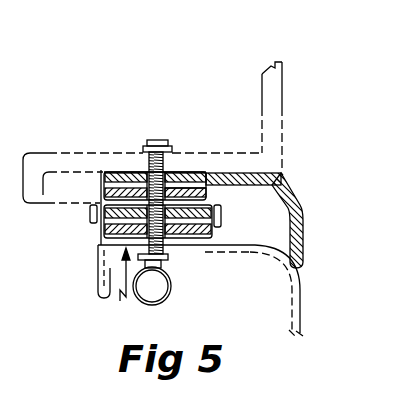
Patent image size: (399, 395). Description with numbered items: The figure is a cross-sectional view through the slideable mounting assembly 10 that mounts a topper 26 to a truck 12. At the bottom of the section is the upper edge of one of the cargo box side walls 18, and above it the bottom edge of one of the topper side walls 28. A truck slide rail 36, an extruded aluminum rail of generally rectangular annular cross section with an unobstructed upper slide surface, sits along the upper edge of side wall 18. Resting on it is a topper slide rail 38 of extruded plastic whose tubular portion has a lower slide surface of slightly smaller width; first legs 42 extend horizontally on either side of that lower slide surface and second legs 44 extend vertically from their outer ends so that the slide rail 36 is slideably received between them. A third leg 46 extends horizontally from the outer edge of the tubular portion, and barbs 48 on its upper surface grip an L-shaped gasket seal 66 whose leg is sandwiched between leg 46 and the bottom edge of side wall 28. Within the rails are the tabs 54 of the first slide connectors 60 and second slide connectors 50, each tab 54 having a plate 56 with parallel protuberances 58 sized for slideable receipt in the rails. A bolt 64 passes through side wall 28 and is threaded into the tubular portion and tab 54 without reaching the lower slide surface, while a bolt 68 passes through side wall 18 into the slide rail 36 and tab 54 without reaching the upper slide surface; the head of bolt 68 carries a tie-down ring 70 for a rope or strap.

The slideable mounting assembly 10 is at (308, 161).
The truck 12 is at (310, 326).
The side walls 18 is at (302, 305).
The topper 26 is at (291, 68).
The side walls 28 is at (284, 99).
The truck slide rails 36 is at (98, 250).
The topper slide rails 38 is at (126, 162).
The first legs 42 is at (93, 198).
The second legs 44 is at (90, 215).
The third leg 46 is at (298, 194).
The barbs 48 is at (254, 178).
The second slide connectors 50 is at (112, 293).
The tabs 54 is at (119, 167).
The plate 56 is at (94, 239).
The protuberances 58 is at (211, 250).
The first slide connectors 60 is at (188, 161).
The bolts 64 is at (156, 140).
The L-shaped gasket seal 66 is at (304, 225).
The bolts 68 is at (169, 266).
The tie-down rings 70 is at (147, 304).